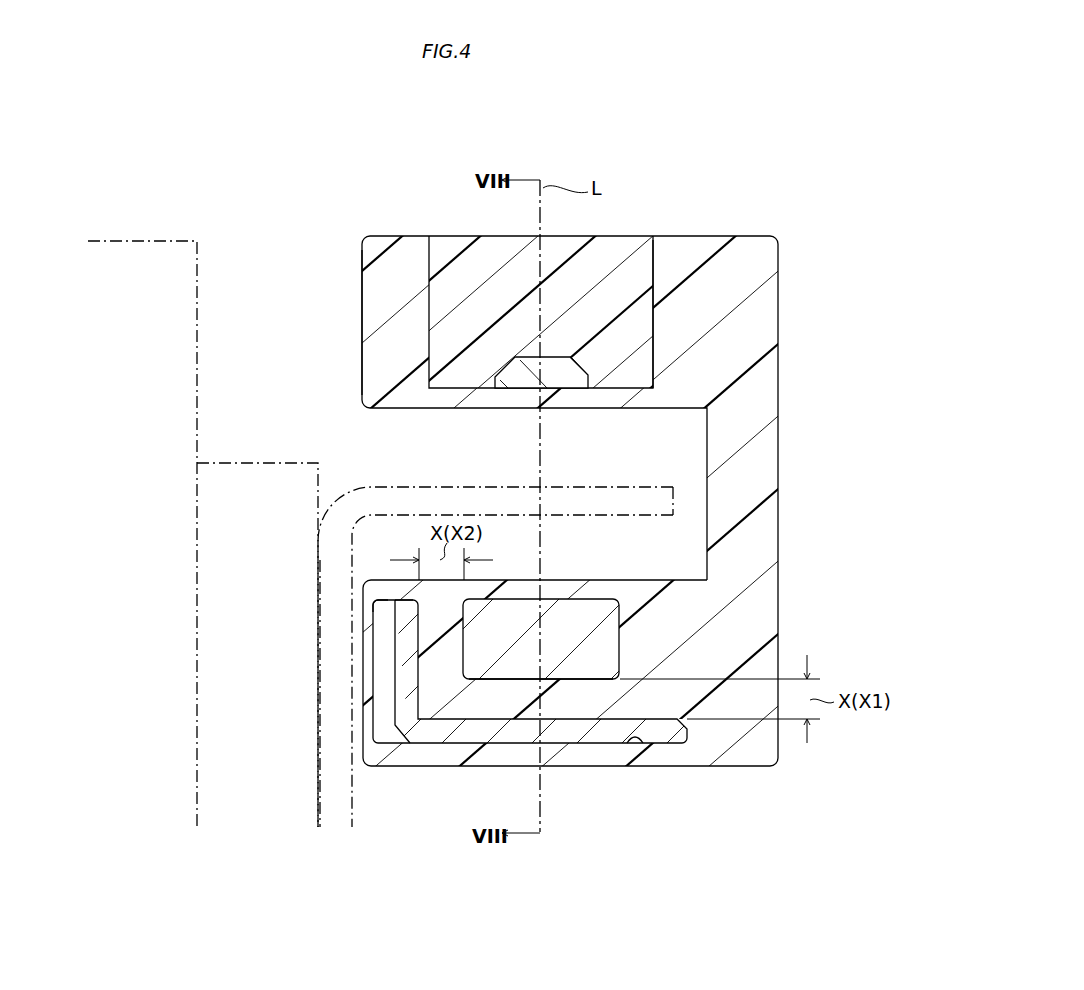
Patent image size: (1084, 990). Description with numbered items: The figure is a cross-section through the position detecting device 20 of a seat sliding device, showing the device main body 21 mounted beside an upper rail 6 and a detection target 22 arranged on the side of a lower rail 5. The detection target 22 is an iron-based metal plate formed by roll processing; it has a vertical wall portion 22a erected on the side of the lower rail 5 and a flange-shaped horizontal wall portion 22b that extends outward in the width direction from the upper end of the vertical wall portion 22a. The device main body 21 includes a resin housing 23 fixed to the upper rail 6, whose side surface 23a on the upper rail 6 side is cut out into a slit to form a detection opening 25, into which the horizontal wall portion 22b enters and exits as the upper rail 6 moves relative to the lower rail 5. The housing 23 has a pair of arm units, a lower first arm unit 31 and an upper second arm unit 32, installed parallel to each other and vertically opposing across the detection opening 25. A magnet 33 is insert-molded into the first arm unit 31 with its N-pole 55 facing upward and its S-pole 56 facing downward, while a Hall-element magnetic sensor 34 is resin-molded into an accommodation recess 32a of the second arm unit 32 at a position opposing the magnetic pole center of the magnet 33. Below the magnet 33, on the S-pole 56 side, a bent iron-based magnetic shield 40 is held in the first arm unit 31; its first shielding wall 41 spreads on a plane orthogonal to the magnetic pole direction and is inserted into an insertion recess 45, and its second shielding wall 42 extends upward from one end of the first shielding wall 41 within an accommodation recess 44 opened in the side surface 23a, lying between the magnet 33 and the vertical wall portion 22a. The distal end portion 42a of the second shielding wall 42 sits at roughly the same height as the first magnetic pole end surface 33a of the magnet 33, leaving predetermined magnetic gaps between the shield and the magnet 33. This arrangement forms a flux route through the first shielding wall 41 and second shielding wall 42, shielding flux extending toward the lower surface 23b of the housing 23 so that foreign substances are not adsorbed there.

The lower rail 5 is at (242, 463).
The upper rail 6 is at (118, 241).
The position detecting device 20 is at (826, 243).
The device main body 21 is at (575, 495).
The detection target 22 is at (352, 498).
The vertical wall portion 22a is at (335, 727).
The horizontal wall portion 22b is at (630, 500).
The housing 23 is at (738, 236).
The side surface 23a is at (362, 358).
The lower surface 23b is at (483, 766).
The detection opening 25 is at (442, 466).
The first arm unit 31 is at (426, 766).
The second arm unit 32 is at (414, 240).
The accommodation recess 32a is at (642, 244).
The magnet 33 is at (539, 565).
The first magnetic pole end surface 33a is at (595, 592).
The magnetic sensor 34 is at (513, 394).
The magnetic shield 40 is at (385, 745).
The first shielding wall 41 is at (579, 743).
The second shielding wall 42 is at (403, 640).
The distal end portion 42a is at (407, 603).
The accommodation recess 44 is at (383, 603).
The insertion recess 45 is at (638, 745).
The N-pole 55 is at (557, 610).
The S-pole 56 is at (557, 658).